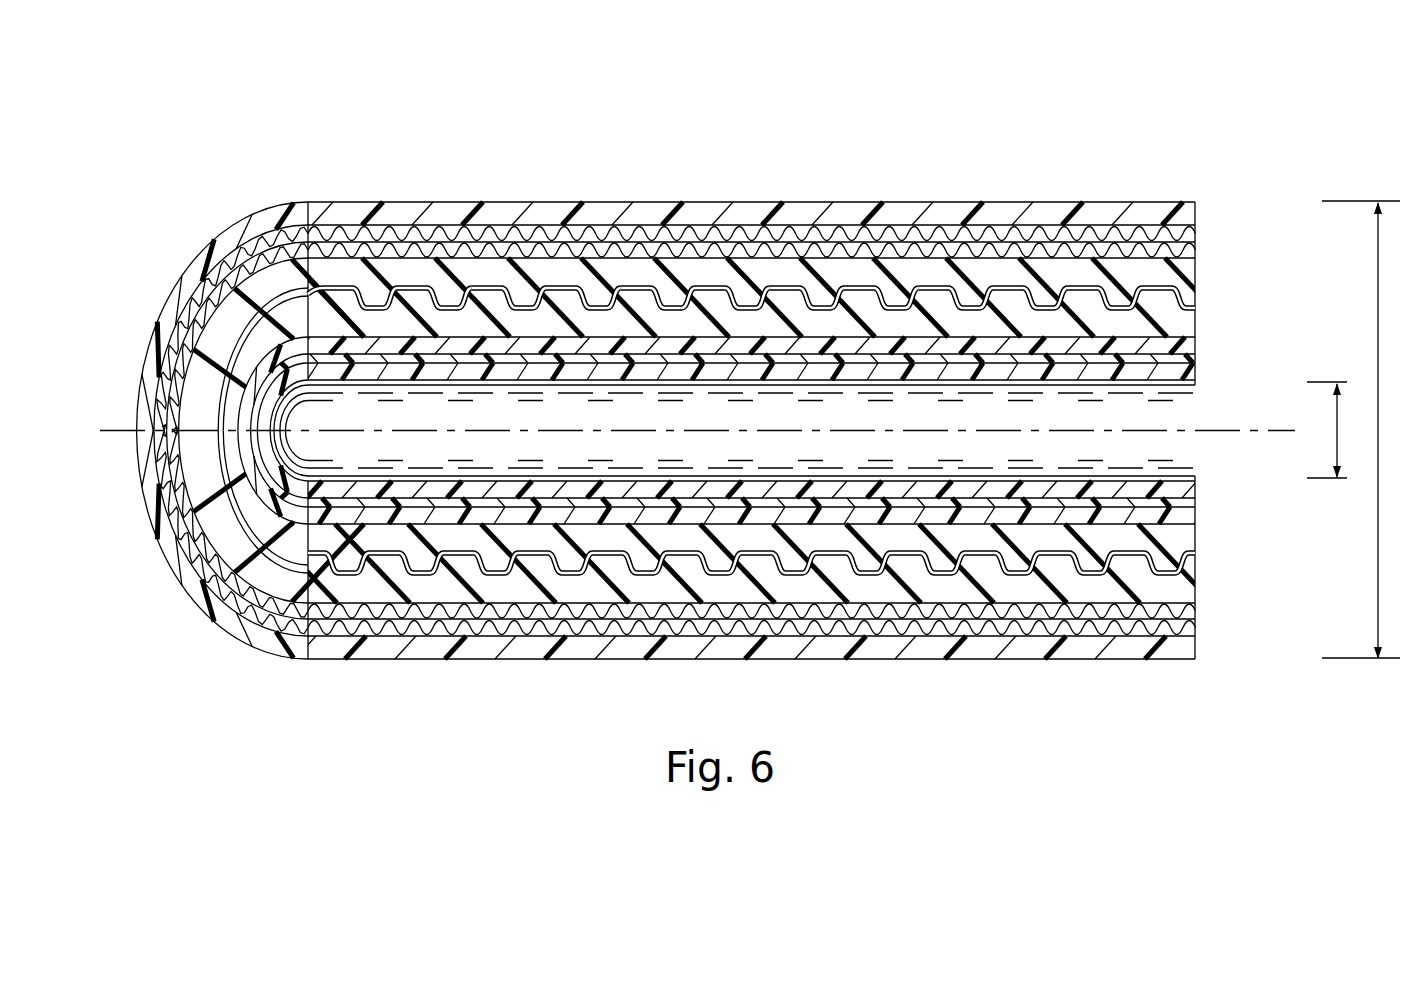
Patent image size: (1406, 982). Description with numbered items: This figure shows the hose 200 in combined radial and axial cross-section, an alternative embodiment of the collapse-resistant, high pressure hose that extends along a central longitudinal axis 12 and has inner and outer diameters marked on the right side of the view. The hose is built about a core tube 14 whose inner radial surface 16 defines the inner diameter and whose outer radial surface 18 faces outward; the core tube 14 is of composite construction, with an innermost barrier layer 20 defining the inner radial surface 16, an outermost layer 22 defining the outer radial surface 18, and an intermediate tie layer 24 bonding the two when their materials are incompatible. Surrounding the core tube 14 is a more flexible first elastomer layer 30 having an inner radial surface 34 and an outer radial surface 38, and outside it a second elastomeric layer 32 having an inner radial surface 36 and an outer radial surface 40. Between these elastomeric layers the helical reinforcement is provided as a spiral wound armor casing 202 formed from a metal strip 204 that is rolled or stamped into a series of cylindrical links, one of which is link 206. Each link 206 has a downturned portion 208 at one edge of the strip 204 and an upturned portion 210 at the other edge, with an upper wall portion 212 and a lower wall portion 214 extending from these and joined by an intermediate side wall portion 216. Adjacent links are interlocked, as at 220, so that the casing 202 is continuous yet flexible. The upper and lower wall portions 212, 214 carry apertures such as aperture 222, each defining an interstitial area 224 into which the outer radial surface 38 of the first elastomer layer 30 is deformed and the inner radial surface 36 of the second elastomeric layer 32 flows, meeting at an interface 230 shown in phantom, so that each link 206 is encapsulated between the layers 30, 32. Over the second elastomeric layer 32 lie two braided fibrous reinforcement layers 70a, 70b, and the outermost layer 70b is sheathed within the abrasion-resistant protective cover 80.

The hose 200 is at (808, 138).
The central longitudinal axis 12 is at (122, 445).
The core tube 14 is at (1195, 518).
The inner radial surface 16 is at (932, 383).
The outer radial surface 18 is at (1030, 337).
The barrier layer 20 is at (1193, 477).
The outermost layer 22 is at (1197, 352).
The intermediate tie layer 24 is at (1195, 500).
The first elastomer layer 30 is at (1197, 318).
The second elastomeric layer 32 is at (1197, 268).
The inner radial surface of first elastomer layer 34 is at (1195, 517).
The inner radial surface of second elastomeric layer 36 is at (1197, 330).
The outer radial surface of first elastomer layer 38 is at (1183, 295).
The outer radial surface of second elastomeric layer 40 is at (1193, 600).
The fibrous reinforcement layer 70a is at (1195, 606).
The outermost fibrous reinforcement layer 70b is at (1195, 627).
The cover 80 is at (1195, 647).
The armor casing 202 is at (260, 555).
The strip 204 is at (240, 515).
The link 206 is at (507, 300).
The downturned portion 208 is at (467, 293).
The upturned portion 210 is at (563, 300).
The upper wall portion 212 is at (457, 290).
The lower wall portion 214 is at (545, 300).
The intermediate side wall portion 216 is at (497, 300).
The interlock 220 is at (562, 274).
The aperture 222 is at (510, 287).
The interstitial area 224 is at (494, 276).
The interface 230 is at (1195, 563).